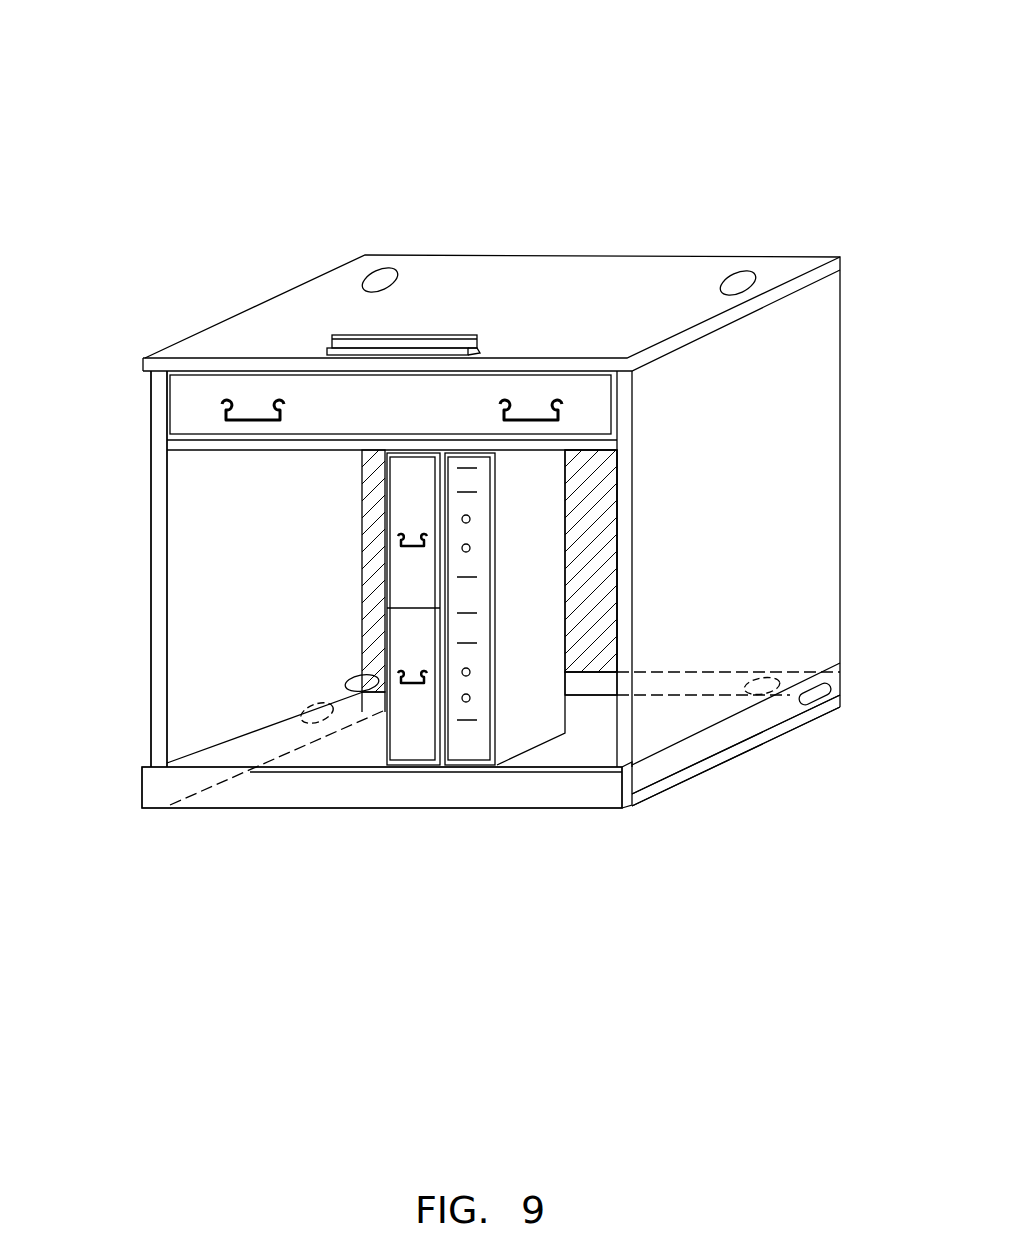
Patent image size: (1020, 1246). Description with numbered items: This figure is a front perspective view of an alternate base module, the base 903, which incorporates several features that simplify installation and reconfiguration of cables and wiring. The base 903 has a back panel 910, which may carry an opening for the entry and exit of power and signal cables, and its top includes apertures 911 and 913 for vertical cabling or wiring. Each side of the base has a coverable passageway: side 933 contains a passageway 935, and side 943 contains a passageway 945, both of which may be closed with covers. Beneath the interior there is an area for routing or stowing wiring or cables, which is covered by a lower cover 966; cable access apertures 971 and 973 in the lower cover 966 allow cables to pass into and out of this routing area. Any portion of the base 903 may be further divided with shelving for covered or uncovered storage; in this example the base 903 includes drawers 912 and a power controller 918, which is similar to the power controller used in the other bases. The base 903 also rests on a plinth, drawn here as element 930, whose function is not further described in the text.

The base 903 is at (629, 77).
The back panel 910 is at (593, 557).
The aperture 911 is at (377, 270).
The drawers 912 is at (410, 638).
The aperture 913 is at (737, 272).
The power controller 918 is at (466, 730).
The base 930 is at (510, 809).
The side 933 is at (790, 791).
The coverable passageway 935 is at (813, 705).
The side 943 is at (142, 697).
The coverable passageway 945 is at (312, 706).
The lower cover 966 is at (595, 698).
The cable access aperture 971 is at (362, 674).
The cable access aperture 973 is at (750, 676).